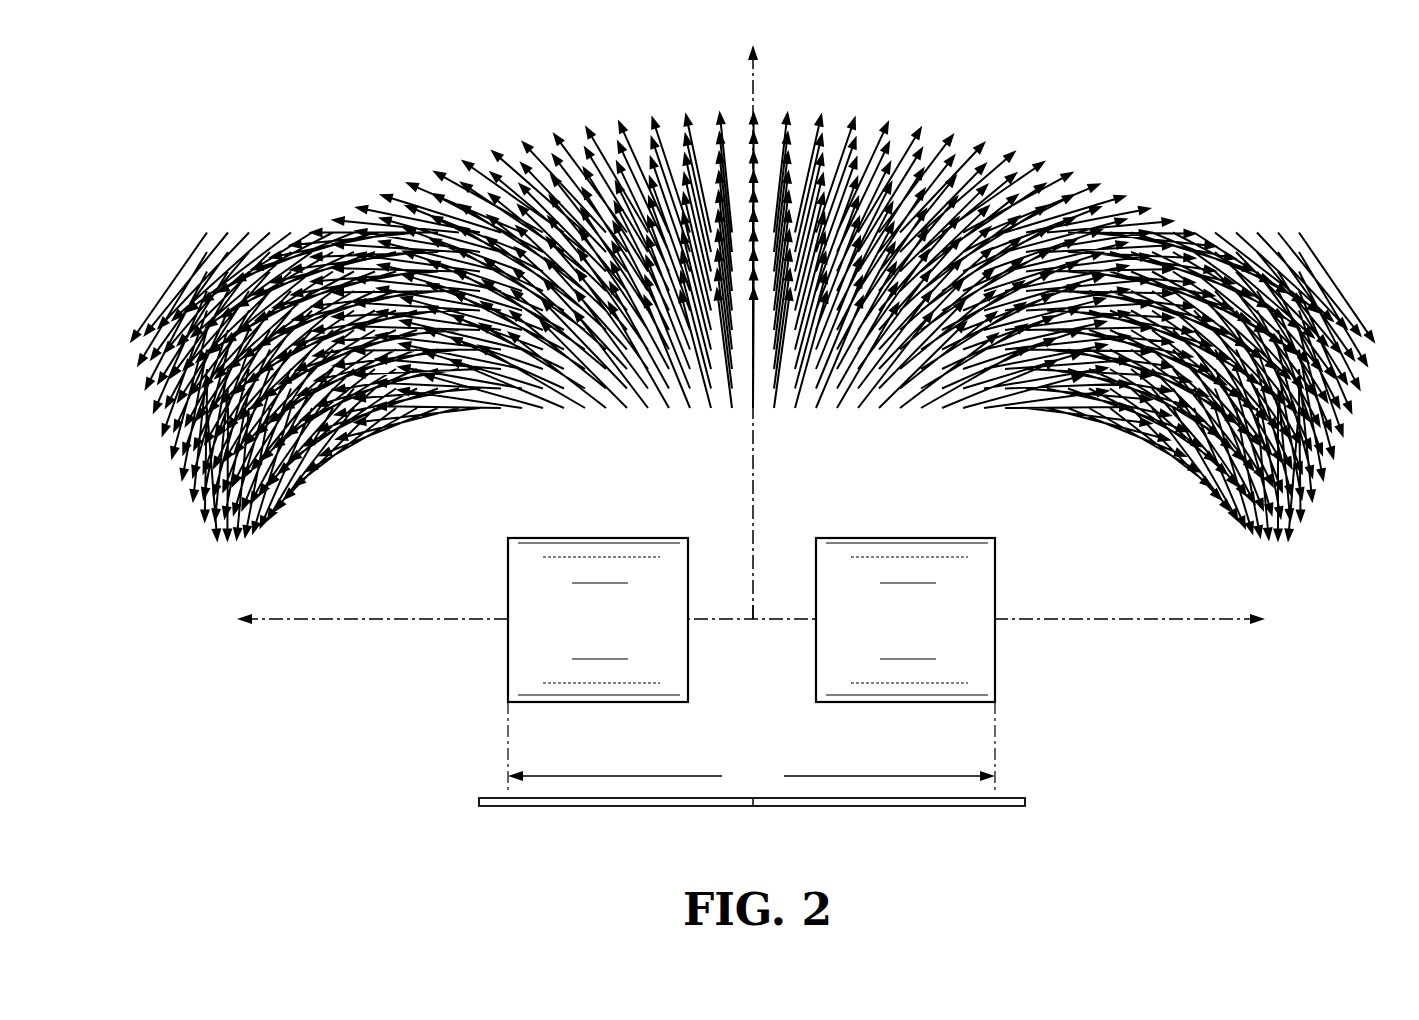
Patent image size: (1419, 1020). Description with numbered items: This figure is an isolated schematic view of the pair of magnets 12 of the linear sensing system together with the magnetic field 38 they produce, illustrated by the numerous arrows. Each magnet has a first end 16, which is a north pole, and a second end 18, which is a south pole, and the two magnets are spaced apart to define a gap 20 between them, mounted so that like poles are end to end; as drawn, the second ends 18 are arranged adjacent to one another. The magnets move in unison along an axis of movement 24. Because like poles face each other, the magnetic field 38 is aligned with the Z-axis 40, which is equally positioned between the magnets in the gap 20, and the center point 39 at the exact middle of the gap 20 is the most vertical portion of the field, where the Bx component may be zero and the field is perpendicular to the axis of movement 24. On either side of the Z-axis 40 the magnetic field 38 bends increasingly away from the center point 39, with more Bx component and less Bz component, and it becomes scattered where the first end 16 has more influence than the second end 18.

The pair of magnets 12 is at (665, 689).
The first end 16 is at (508, 690).
The second end 18 is at (688, 690).
The gap 20 is at (750, 655).
The axis of movement 24 is at (1170, 622).
The magnetic field 38 is at (1174, 197).
The center point 39 is at (753, 619).
The Z-axis 40 is at (752, 70).